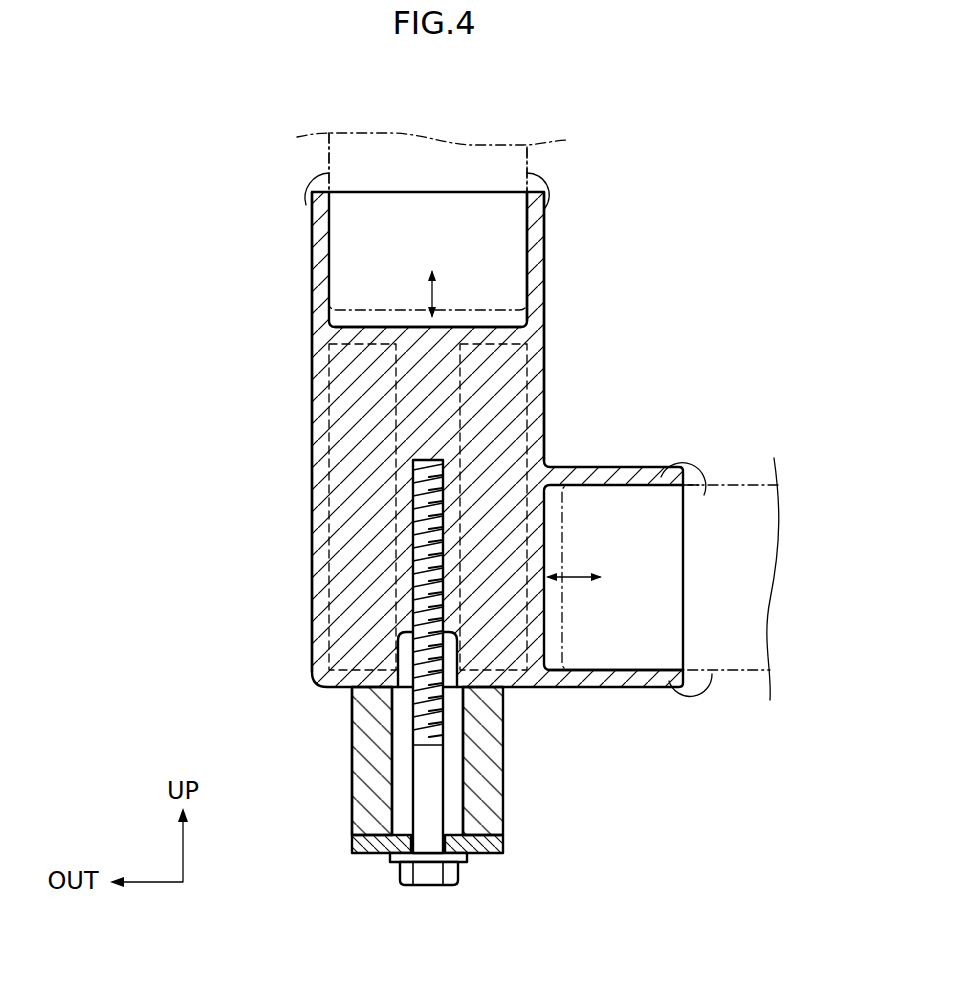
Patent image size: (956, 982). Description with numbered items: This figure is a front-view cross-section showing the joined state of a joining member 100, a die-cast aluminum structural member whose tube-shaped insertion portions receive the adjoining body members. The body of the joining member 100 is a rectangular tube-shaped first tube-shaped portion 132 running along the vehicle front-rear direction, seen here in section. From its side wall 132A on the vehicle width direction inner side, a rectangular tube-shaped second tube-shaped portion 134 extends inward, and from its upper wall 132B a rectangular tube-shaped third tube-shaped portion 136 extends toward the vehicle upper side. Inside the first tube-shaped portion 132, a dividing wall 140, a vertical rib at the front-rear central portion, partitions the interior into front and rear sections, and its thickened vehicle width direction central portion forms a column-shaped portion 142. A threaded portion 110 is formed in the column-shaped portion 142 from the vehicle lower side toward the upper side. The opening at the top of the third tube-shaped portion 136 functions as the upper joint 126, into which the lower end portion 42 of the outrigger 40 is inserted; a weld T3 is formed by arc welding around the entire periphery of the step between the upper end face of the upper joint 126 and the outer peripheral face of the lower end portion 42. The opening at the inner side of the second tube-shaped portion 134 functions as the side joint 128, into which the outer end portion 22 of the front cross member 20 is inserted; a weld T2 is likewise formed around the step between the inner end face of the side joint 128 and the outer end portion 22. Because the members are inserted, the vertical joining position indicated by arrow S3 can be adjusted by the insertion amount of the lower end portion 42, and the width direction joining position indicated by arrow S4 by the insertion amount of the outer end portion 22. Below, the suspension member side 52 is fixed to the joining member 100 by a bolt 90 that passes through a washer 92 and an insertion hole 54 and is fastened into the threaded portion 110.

The joining member 100 is at (553, 373).
The first tube-shaped portion 132 is at (314, 380).
The side wall 132A is at (546, 407).
The upper wall 132B is at (479, 333).
The third tube-shaped portion 136 is at (540, 251).
The dividing wall 140 is at (357, 432).
The column-shaped portion 142 is at (410, 437).
The lower end portion 42 is at (357, 247).
The outrigger 40 is at (322, 153).
The upper joint 126 is at (522, 210).
The side joint 128 is at (722, 500).
The weld T3 is at (546, 180).
The weld T2 is at (694, 472).
The vehicle vertical direction joining position S3 is at (436, 295).
The vehicle width direction joining position S4 is at (580, 580).
The outer end portion 22 is at (633, 650).
The front cross member 20 is at (727, 686).
The second tube-shaped portion 134 is at (586, 685).
The threaded portion 110 is at (420, 535).
The suspension member side 52 is at (345, 762).
The insertion hole 54 is at (400, 797).
The bolt 90 is at (428, 872).
The washer 92 is at (486, 853).